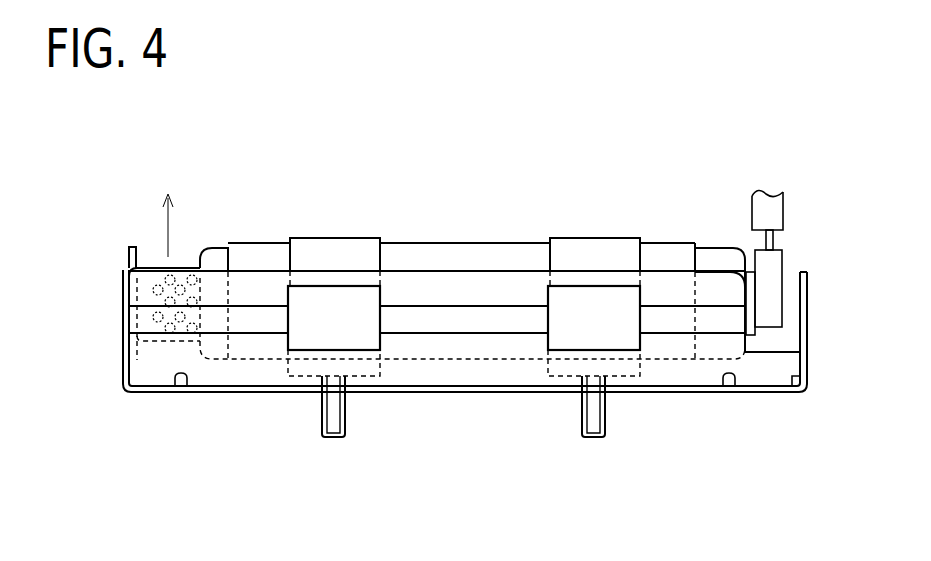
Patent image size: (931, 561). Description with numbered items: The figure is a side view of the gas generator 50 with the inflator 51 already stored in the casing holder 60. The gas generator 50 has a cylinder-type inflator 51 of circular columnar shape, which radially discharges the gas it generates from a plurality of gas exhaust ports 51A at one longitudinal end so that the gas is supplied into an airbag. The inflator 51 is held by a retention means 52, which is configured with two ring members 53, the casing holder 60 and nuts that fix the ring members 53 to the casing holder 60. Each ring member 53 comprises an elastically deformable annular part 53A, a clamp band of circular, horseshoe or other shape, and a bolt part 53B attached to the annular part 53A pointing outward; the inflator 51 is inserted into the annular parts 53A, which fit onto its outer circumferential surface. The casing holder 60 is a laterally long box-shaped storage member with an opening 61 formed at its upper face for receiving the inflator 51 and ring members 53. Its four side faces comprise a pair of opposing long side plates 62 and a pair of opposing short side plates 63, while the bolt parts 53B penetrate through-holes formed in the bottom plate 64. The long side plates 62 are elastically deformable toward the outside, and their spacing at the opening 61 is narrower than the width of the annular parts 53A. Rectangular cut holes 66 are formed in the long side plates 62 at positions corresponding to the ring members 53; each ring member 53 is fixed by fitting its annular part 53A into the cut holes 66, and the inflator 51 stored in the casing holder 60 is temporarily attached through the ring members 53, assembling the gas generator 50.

The gas generator 50 is at (447, 237).
The cylinder-type inflator 51 is at (495, 257).
The gas exhaust ports 51A is at (181, 288).
The retention means 52 is at (453, 397).
The ring member 53 is at (326, 237).
The annular part 53A is at (351, 247).
The bolt part 53B is at (335, 433).
The casing holder 60 is at (184, 397).
The opening 61 is at (258, 271).
The long side plates 62 is at (228, 367).
The short side plates 63 is at (123, 271).
The bottom plate 64 is at (510, 394).
The cut holes 66 is at (315, 333).